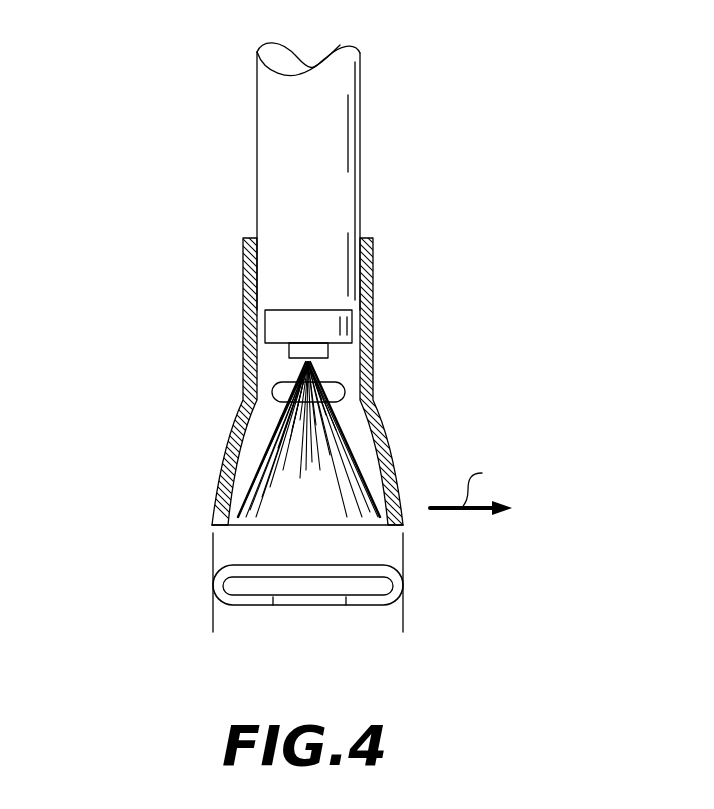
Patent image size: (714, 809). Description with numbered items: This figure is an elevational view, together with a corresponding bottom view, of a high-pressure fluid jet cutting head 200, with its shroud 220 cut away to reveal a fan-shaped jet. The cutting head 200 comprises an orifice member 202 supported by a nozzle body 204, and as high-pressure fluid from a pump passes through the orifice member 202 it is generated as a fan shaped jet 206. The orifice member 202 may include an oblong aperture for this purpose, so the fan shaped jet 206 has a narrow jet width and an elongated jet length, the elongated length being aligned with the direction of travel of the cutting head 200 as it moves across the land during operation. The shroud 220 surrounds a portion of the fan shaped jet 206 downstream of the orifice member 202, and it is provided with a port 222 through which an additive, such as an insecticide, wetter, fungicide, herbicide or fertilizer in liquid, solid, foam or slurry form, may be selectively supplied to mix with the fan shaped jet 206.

The high-pressure fluid jet cutting head 200 is at (148, 77).
The orifice member 202 is at (300, 362).
The nozzle body 204 is at (330, 187).
The fan shaped jet 206 is at (272, 440).
The shroud 220 is at (372, 425).
The port 222 is at (346, 390).